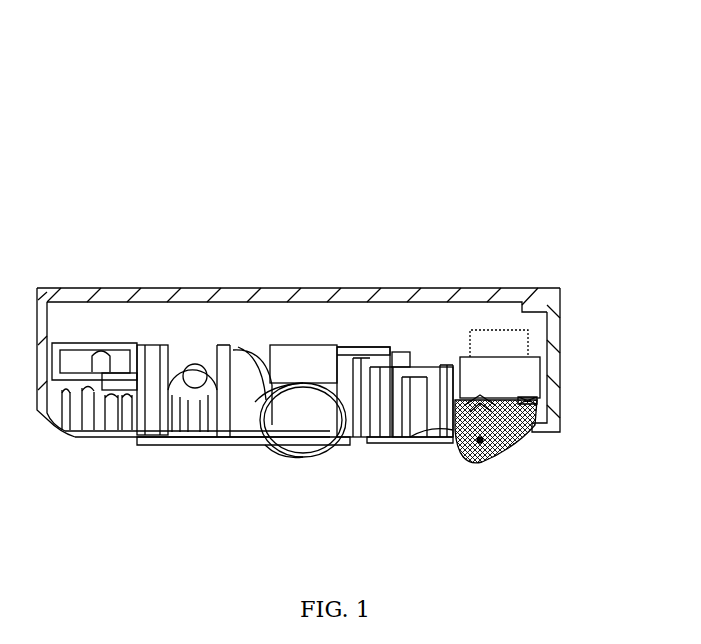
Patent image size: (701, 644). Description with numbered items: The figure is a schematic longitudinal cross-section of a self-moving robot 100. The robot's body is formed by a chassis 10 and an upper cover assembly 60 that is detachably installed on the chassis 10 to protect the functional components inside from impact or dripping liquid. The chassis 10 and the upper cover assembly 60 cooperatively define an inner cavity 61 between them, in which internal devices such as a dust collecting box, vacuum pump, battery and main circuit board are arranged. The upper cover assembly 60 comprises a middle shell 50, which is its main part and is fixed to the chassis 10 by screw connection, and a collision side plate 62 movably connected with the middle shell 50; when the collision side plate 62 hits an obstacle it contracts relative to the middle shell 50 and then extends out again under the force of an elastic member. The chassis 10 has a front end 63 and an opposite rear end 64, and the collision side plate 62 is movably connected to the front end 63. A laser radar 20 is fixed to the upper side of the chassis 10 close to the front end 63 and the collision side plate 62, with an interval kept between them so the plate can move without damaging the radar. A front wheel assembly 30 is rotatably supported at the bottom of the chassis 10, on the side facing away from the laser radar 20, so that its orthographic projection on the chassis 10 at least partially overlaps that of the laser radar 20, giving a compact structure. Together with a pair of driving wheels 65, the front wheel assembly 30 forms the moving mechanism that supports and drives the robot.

The self-moving robot 100 is at (480, 28).
The upper cover assembly 60 is at (627, 202).
The middle shell 50 is at (465, 298).
The collision side plate 62 is at (557, 333).
The inner cavity 61 is at (64, 330).
The rear end 64 is at (62, 433).
The driving wheels 65 is at (260, 452).
The chassis 10 is at (373, 440).
The front wheel assembly 30 is at (467, 458).
The laser radar 20 is at (527, 382).
The front end 63 is at (527, 440).